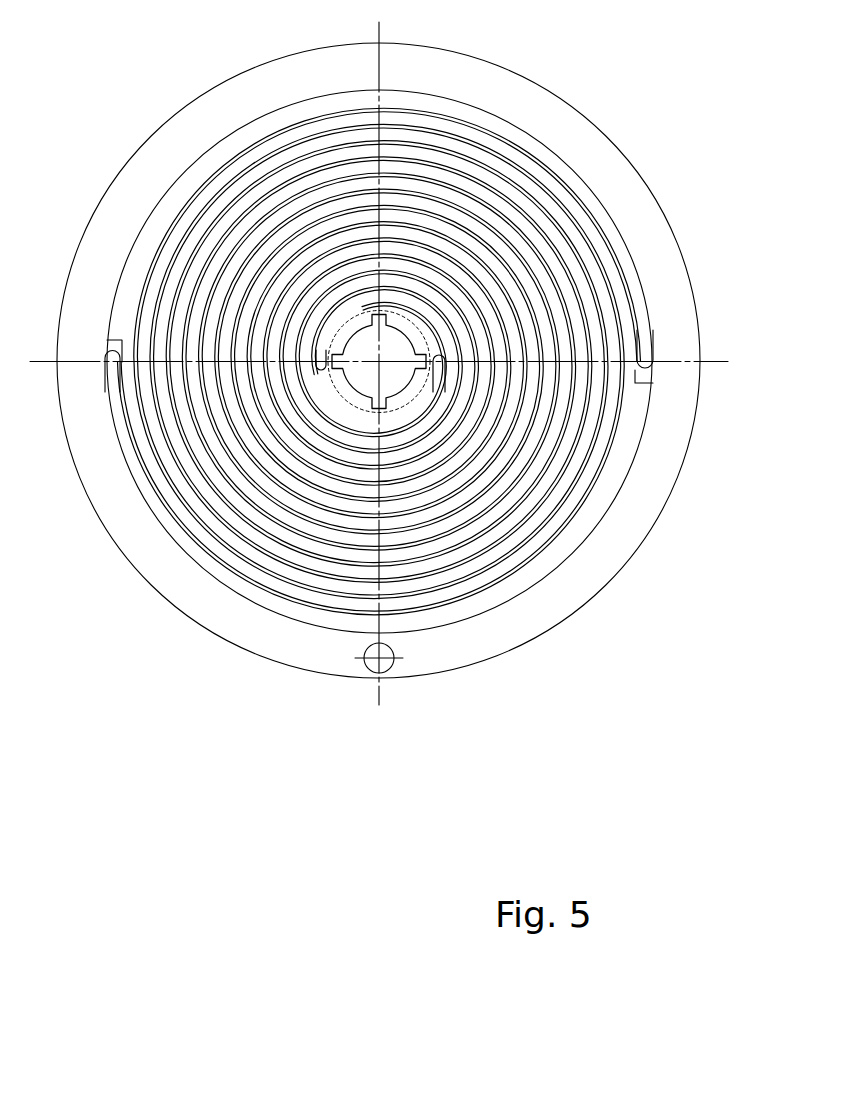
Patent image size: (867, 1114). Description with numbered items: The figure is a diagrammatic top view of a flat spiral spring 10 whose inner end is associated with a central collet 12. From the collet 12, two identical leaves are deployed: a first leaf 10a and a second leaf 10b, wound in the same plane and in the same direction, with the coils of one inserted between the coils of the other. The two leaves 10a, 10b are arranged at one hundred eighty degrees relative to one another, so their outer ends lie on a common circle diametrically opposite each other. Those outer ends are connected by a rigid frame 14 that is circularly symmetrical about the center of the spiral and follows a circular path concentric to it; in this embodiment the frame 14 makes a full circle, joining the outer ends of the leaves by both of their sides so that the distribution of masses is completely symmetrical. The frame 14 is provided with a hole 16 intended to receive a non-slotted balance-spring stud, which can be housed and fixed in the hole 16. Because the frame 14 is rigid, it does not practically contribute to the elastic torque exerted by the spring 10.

The flat spiral spring 10 is at (648, 100).
The first leaf 10a is at (322, 320).
The second leaf 10b is at (293, 373).
The collet 12 is at (362, 310).
The rigid frame 14 is at (222, 651).
The hole 16 is at (373, 667).